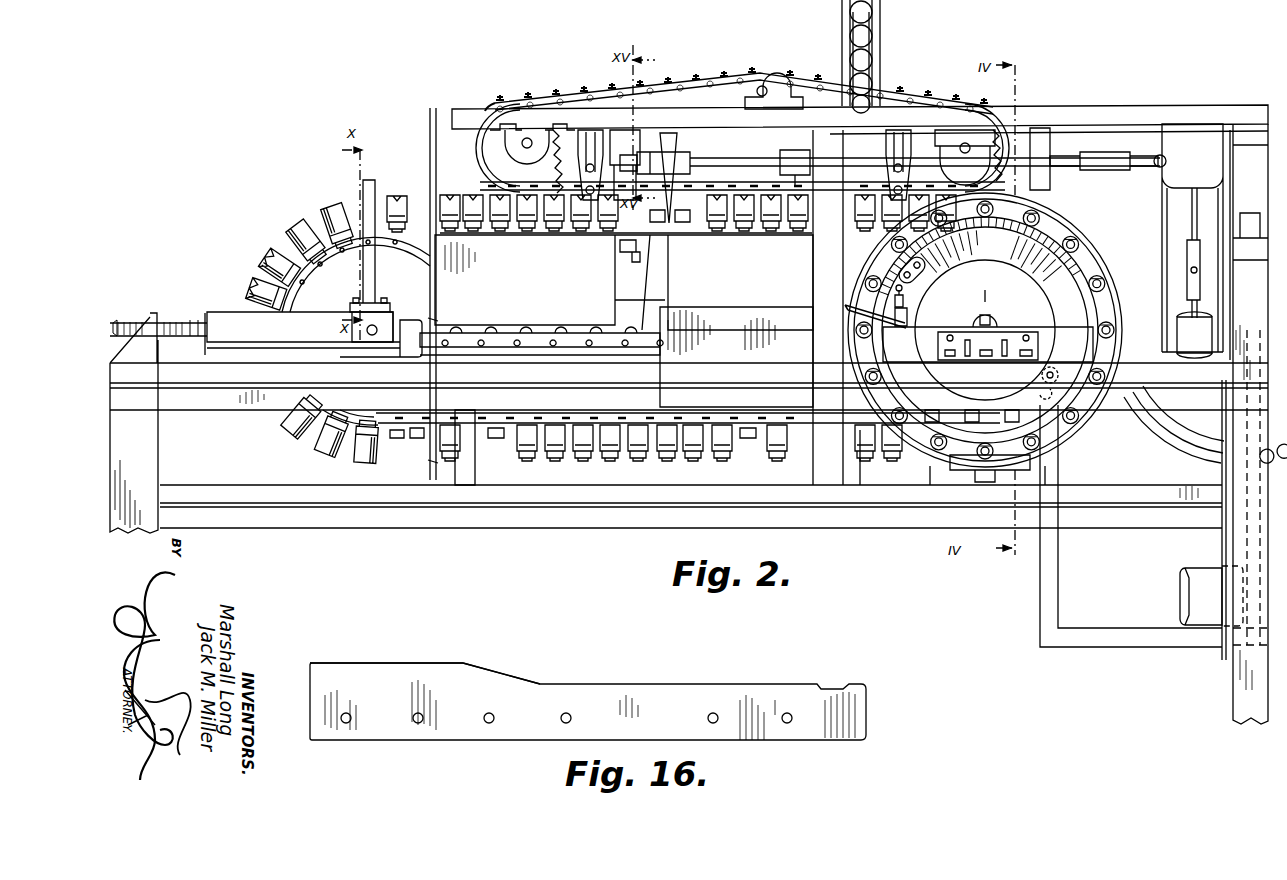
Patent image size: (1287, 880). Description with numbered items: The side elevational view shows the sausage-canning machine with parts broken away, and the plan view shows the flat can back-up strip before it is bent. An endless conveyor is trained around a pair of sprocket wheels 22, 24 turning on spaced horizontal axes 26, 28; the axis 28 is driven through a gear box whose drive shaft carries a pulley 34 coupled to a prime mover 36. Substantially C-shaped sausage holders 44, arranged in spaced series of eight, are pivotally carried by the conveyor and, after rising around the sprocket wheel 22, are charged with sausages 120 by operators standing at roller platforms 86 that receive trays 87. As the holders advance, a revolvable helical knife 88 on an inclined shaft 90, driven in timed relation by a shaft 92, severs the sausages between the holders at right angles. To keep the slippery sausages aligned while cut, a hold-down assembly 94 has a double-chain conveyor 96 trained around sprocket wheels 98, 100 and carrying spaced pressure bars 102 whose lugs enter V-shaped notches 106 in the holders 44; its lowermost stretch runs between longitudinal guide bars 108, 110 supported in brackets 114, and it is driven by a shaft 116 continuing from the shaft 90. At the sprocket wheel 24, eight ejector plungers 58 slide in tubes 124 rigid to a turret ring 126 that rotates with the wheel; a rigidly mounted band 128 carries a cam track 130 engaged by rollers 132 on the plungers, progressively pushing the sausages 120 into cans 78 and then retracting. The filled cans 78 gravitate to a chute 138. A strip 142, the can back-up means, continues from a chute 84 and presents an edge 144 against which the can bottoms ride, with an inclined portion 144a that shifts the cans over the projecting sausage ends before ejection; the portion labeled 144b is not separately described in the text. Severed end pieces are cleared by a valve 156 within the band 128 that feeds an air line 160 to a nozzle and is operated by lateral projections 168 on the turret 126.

In FIG. 2, the sprocket wheel 22 is at (308, 244).
In FIG. 2, the sprocket wheel 24 is at (1072, 106).
In FIG. 2, the horizontal axis 26 is at (375, 328).
In FIG. 2, the horizontal axis 28 is at (994, 320).
In FIG. 2, the pulley 34 is at (1250, 342).
In FIG. 2, the prime mover 36 is at (1182, 569).
In FIG. 2, the sausage holder 44 is at (664, 464).
In FIG. 2, the ejector plunger 58 is at (1098, 282).
In FIG. 2, the can 78 is at (872, 76).
In FIG. 2, the chute 84 is at (842, 50).
In FIG. 2, the roller platform 86 is at (544, 350).
In FIG. 2, the tray 87 is at (602, 296).
In FIG. 2, the helical knife 88 is at (664, 140).
In FIG. 2, the shaft 90 is at (1066, 165).
In FIG. 2, the shaft 92 is at (1188, 224).
In FIG. 2, the hold-down assembly 94 is at (495, 94).
In FIG. 2, the endless conveyor 96 is at (678, 80).
In FIG. 2, the sprocket wheel 98 is at (486, 160).
In FIG. 2, the sprocket wheel 100 is at (1000, 152).
In FIG. 2, the pressure bar 102 is at (764, 68).
In FIG. 2, the V-shaped notch 106 is at (478, 194).
In FIG. 2, the guide bar 108 is at (862, 202).
In FIG. 2, the guide bar 110 is at (798, 166).
In FIG. 2, the bracket 114 is at (586, 139).
In FIG. 2, the shaft 116 is at (606, 137).
In FIG. 2, the sausage 120 is at (1182, 448).
In FIG. 2, the tube 124 is at (1066, 248).
In FIG. 2, the turret ring 126 is at (956, 260).
In FIG. 2, the band 128 is at (980, 256).
In FIG. 2, the cam track 130 is at (955, 234).
In FIG. 2, the roller 132 is at (1084, 323).
In FIG. 2, the chute 138 is at (1148, 441).
In FIG. 16, the strip 142 is at (756, 691).
In FIG. 16, the edge 144 is at (643, 682).
In FIG. 16, the inclined portion 144a is at (506, 673).
In FIG. 16, the raised edge 144b is at (387, 663).
In FIG. 2, the valve 156 is at (900, 330).
In FIG. 2, the line 160 is at (848, 314).
In FIG. 2, the lateral projection 168 is at (918, 323).